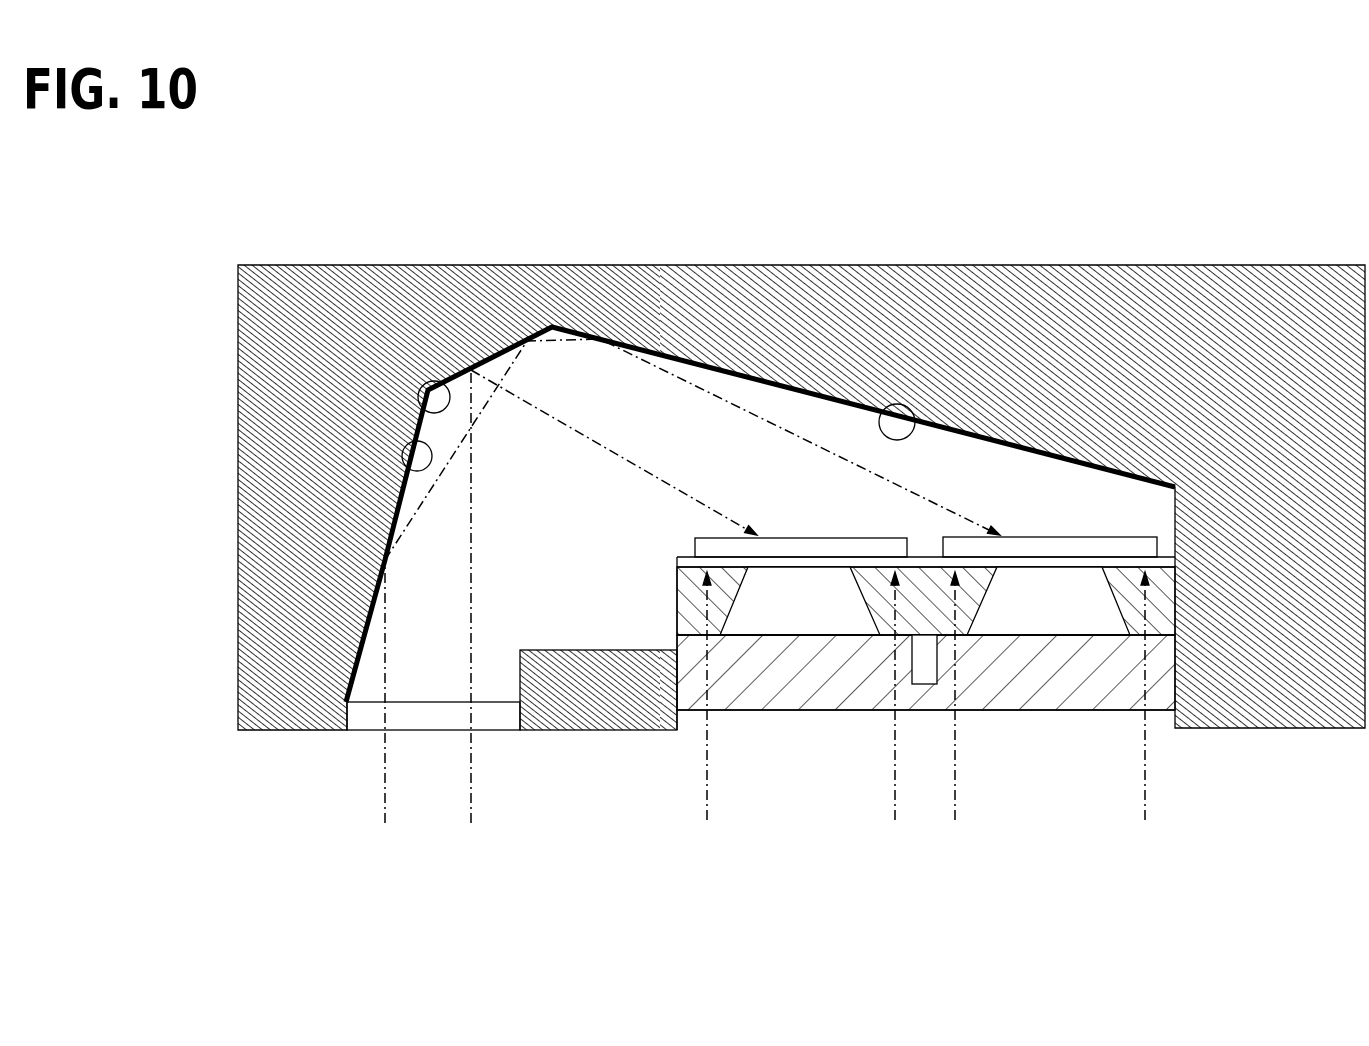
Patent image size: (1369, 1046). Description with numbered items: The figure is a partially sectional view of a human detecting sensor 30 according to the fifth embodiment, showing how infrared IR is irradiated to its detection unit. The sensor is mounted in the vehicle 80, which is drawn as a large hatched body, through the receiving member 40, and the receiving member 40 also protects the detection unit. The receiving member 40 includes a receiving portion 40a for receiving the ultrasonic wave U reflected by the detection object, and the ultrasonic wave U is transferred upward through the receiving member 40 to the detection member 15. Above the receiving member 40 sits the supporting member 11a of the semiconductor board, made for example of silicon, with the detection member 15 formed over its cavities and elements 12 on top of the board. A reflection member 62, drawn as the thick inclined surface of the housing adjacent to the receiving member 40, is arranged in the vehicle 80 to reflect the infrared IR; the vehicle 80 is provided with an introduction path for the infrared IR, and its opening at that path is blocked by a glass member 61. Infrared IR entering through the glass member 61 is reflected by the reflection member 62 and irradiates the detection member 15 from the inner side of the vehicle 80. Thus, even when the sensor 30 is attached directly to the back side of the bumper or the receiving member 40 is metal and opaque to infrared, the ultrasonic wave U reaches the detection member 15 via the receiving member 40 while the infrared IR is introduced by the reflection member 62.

The vehicle 80 is at (305, 271).
The reflection member 62 is at (418, 398).
The glass member 61 is at (368, 722).
The human detecting sensor 30 is at (1162, 744).
The supporting member 11a is at (677, 604).
The receiving member 40 is at (800, 707).
The receiving portion 40a is at (1045, 712).
The detection member 15 is at (805, 567).
The detecting element 12 is at (785, 540).
The infrared IR is at (385, 795).
The ultrasonic wave U is at (707, 808).